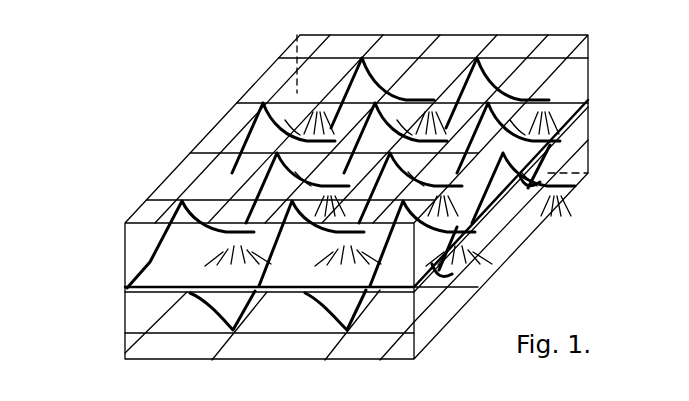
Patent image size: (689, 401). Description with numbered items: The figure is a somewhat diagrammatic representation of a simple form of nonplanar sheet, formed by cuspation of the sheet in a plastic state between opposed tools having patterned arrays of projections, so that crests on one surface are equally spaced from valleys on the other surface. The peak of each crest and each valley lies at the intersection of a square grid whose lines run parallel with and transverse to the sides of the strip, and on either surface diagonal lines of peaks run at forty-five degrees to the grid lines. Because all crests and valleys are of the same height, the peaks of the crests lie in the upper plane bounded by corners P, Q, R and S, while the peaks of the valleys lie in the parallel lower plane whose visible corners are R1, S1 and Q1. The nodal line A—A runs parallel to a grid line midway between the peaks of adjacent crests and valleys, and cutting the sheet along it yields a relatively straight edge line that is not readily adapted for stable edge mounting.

The corner of crest peak plane P is at (288, 24).
The corner of crest peak plane Q is at (594, 25).
The corner of crest peak plane R is at (110, 223).
The corner of crest peak plane S is at (405, 238).
The corner of valley peak plane R1 is at (125, 379).
The corner of valley peak plane S1 is at (412, 380).
The corner of valley peak plane Q1 is at (594, 184).
The nodal line A is at (544, 290).